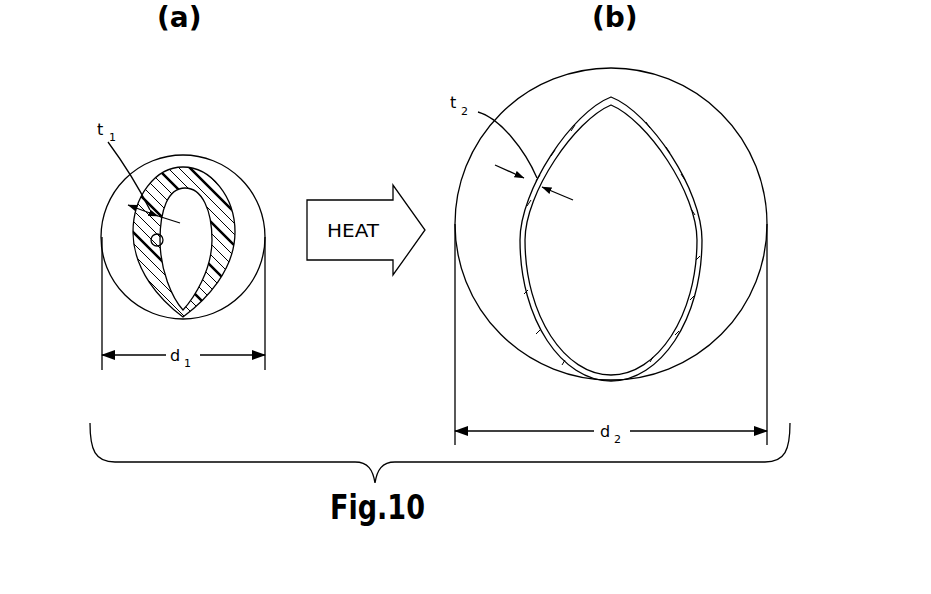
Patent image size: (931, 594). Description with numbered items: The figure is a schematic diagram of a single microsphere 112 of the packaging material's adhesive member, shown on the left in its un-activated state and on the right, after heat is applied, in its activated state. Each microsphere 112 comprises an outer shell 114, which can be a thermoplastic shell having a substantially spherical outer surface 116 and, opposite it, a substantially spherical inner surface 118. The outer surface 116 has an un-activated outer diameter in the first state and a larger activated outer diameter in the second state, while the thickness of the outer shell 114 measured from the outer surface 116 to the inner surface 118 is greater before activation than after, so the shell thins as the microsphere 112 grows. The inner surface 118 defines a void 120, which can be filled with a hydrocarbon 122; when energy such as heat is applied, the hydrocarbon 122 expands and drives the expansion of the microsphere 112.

The microsphere 112 is at (441, 216).
The outer shell 114 is at (213, 292).
The outer surface 116 is at (115, 218).
The inner surface 118 is at (150, 240).
The void 120 is at (172, 262).
The hydrocarbon 122 is at (188, 250).